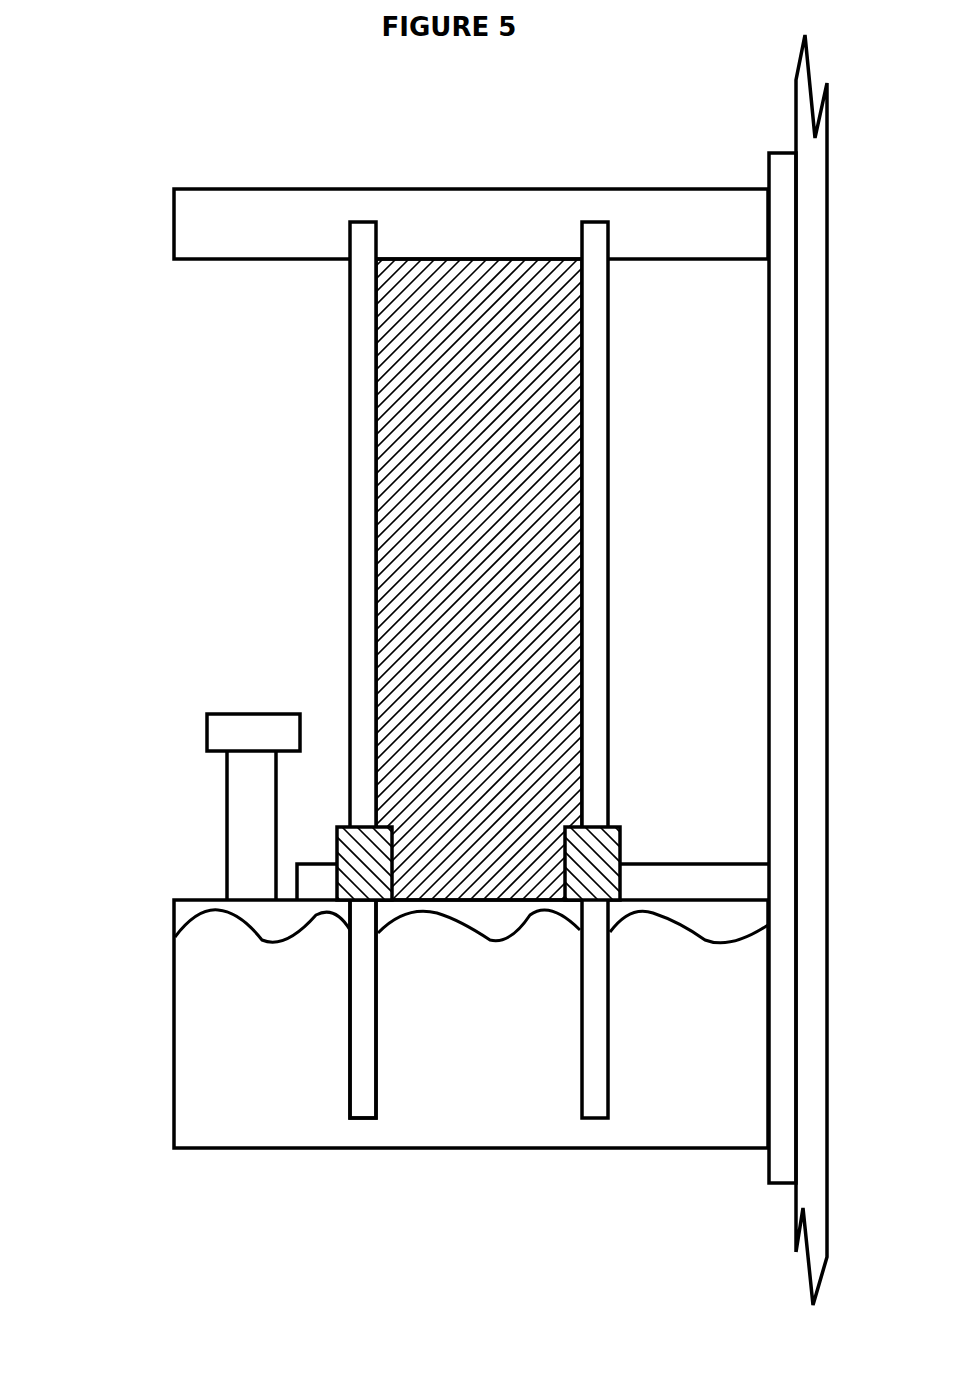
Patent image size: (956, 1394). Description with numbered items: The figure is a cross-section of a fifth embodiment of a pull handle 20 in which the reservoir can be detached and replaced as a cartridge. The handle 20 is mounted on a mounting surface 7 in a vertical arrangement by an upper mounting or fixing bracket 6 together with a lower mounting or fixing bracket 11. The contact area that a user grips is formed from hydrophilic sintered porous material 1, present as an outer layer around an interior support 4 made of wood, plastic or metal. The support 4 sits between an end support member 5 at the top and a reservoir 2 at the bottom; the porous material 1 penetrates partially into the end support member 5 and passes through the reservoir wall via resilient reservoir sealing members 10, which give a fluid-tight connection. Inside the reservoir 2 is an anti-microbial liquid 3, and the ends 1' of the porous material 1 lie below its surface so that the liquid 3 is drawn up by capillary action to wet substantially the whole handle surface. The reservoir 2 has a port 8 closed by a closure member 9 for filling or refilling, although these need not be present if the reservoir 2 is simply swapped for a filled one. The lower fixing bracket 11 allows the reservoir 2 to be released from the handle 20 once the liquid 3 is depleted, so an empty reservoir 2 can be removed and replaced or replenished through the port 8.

The hydrophilic sintered porous material 1 is at (477, 670).
The ends of the hydrophilic sintered porous material 1' is at (443, 1096).
The reservoir 2 is at (175, 972).
The anti-microbial liquid 3 is at (255, 1047).
The support 4 is at (465, 492).
The end support member 5 is at (440, 218).
The upper mounting bracket 6 is at (790, 193).
The mounting surface 7 is at (825, 155).
The port 8 is at (245, 793).
The closure member 9 is at (242, 713).
The reservoir sealing member 10 is at (380, 828).
The lower mounting bracket 11 is at (728, 885).
The pull handle 20 is at (312, 435).